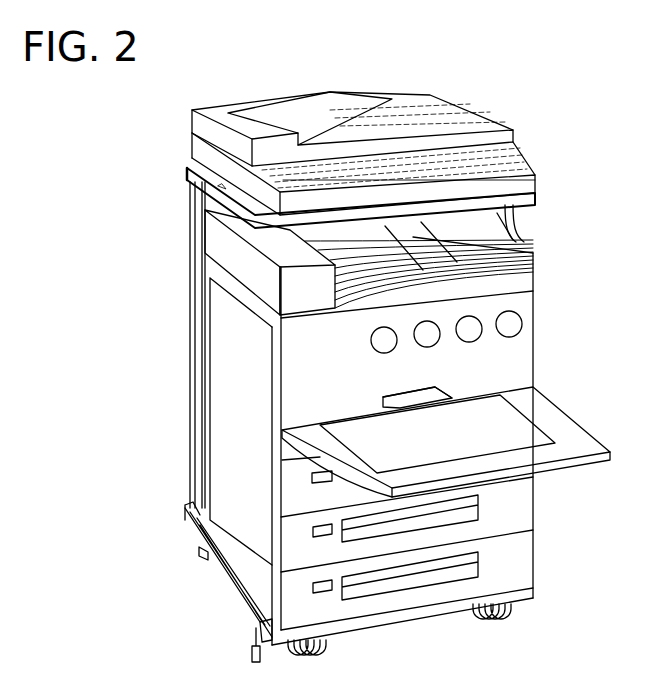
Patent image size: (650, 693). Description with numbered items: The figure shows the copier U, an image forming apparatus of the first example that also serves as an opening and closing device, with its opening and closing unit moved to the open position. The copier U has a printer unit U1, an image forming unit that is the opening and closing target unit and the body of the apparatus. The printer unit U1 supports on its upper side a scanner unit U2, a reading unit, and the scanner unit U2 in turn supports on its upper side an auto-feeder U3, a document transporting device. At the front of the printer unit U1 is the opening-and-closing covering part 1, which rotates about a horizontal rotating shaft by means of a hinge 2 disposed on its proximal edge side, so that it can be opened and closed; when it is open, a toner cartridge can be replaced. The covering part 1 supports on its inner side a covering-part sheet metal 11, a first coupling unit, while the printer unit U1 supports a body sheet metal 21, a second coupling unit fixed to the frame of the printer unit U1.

The copier U is at (570, 79).
The printer unit U1 is at (522, 307).
The scanner unit U2 is at (167, 143).
The auto-feeder U3 is at (213, 108).
The opening-and-closing covering part 1 is at (563, 427).
The covering-part sheet metal 11 is at (517, 422).
The hinge 2 is at (453, 390).
The body sheet metal 21 is at (381, 402).